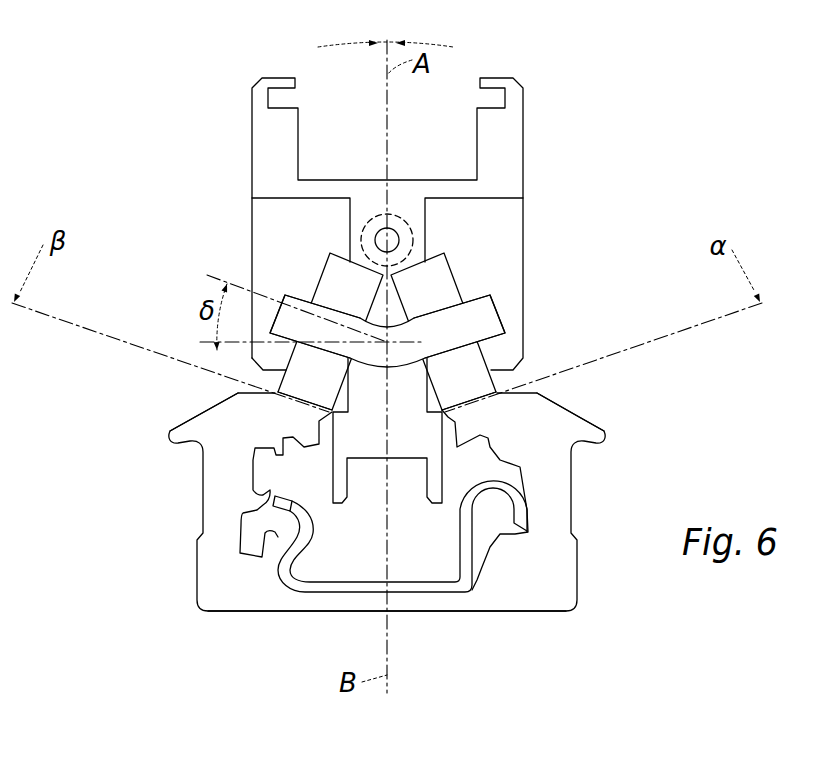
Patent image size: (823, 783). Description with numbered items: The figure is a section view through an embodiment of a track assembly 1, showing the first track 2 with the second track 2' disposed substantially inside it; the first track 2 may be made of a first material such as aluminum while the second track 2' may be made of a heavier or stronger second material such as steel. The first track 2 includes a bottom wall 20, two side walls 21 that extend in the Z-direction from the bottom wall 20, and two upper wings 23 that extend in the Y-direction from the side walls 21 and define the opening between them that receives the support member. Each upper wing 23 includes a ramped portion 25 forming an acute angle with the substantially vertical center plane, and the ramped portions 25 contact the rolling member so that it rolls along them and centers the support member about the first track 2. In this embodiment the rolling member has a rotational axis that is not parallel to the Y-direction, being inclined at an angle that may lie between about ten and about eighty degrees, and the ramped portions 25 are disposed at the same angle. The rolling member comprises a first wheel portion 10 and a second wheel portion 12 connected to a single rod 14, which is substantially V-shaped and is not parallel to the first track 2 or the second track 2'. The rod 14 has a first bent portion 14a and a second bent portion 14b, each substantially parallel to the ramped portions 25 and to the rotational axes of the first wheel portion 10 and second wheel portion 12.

The track assembly 1 is at (602, 120).
The first track 2 is at (387, 527).
The second track 2' is at (365, 579).
The first wheel portion 10 is at (340, 280).
The second wheel portion 12 is at (443, 293).
The rod 14 is at (502, 300).
The first bent portion 14a is at (297, 317).
The second bent portion 14b is at (480, 323).
The bottom wall 20 is at (420, 613).
The side walls 21 is at (228, 523).
The upper wings 23 is at (245, 412).
The ramped portion 25 is at (300, 405).